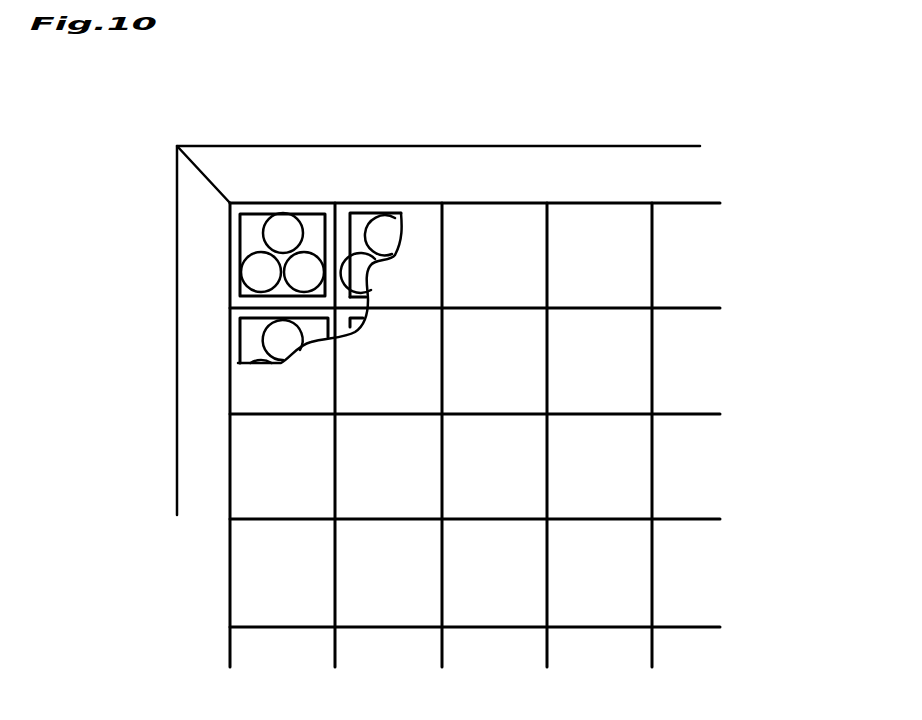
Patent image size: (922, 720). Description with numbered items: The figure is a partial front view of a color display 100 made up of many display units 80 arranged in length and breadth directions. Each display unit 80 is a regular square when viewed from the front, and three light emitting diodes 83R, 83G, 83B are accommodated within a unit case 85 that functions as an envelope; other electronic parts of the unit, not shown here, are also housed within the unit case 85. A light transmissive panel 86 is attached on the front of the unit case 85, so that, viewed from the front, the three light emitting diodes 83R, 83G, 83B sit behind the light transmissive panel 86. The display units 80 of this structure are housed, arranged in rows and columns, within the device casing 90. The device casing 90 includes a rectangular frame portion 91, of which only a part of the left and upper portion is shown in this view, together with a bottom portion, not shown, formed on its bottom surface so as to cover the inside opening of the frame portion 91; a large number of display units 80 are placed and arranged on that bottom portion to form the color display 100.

The color display 100 is at (345, 84).
The device casing 90 is at (541, 126).
The frame portion 91 is at (608, 178).
The light transmissive panel 86 is at (253, 395).
The display unit 80 is at (676, 605).
The unit case 85 is at (277, 210).
The light emitting diode 83R is at (285, 235).
The light emitting diode 83G is at (260, 283).
The light emitting diode 83B is at (307, 277).